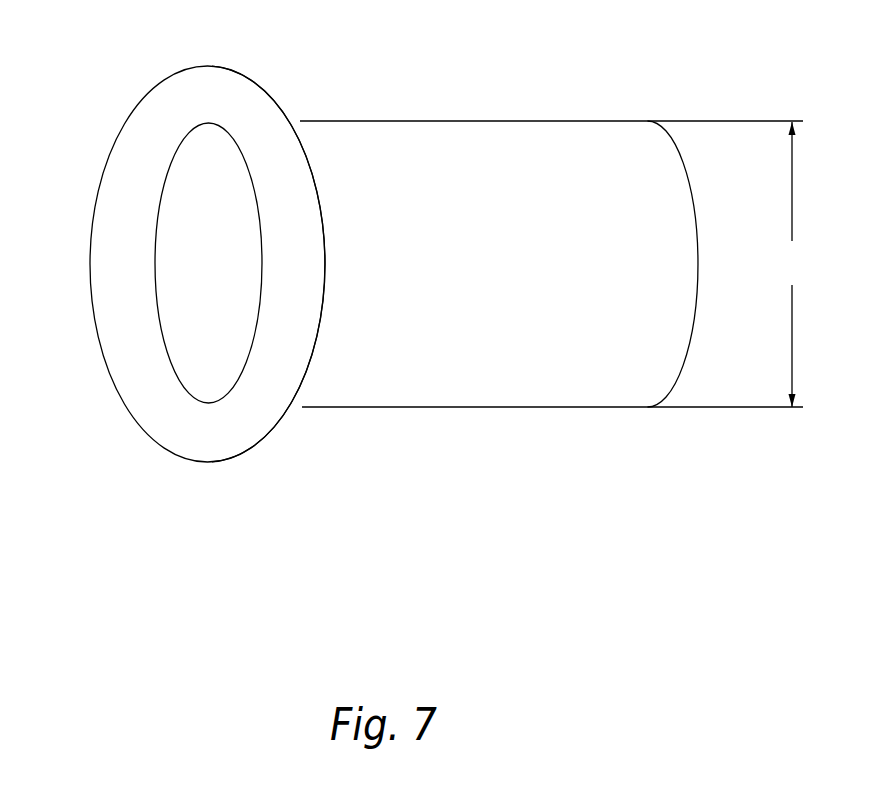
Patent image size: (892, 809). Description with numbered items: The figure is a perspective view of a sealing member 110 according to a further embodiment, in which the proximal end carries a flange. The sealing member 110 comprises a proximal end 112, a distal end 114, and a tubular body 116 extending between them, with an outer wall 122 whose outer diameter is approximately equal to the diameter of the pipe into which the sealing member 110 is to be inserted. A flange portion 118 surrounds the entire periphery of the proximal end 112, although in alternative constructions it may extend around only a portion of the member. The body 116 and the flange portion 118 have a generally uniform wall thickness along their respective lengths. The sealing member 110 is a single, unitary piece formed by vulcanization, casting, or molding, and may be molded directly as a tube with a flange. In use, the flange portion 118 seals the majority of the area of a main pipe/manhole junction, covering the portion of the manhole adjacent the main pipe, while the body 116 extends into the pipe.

The sealing member 110 is at (418, 241).
The proximal end 112 is at (126, 113).
The distal end 114 is at (684, 172).
The body 116 is at (463, 130).
The flange portion 118 is at (117, 151).
The outer wall 122 is at (507, 391).